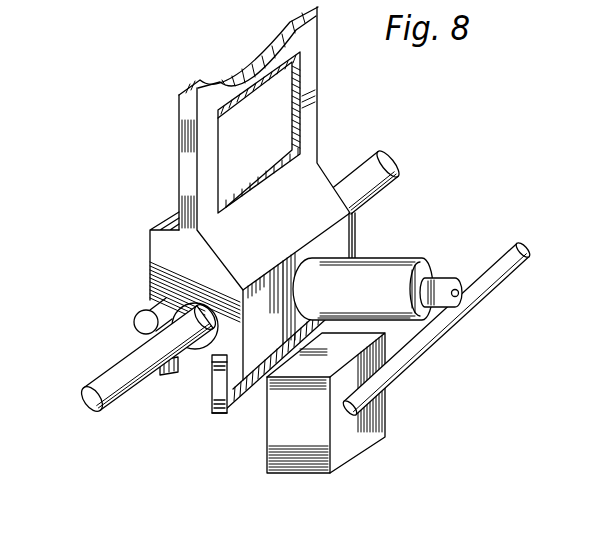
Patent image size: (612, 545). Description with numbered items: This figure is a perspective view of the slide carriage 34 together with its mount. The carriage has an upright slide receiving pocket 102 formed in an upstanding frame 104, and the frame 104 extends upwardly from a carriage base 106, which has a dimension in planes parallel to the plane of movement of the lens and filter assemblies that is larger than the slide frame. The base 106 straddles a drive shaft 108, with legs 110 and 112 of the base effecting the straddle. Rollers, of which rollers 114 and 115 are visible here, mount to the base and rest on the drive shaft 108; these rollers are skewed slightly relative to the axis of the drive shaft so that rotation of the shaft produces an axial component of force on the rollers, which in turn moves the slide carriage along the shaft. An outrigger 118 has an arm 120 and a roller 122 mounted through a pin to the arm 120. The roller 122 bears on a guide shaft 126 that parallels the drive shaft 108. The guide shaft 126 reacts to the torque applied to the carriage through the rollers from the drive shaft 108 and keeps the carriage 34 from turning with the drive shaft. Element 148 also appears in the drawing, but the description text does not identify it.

The slide carriage 34 is at (404, 199).
The upright slide receiving pocket 102 is at (196, 93).
The upstanding frame 104 is at (210, 143).
The carriage base 106 is at (332, 241).
The drive shaft 108 is at (106, 371).
The leg 110 is at (162, 372).
The leg 112 is at (213, 374).
The roller 114 is at (142, 316).
The roller 115 is at (198, 368).
The outrigger 118 is at (449, 256).
The arm 120 is at (275, 361).
The roller 122 is at (458, 297).
The guide shaft 126 is at (440, 338).
The pin tip 148 is at (228, 415).